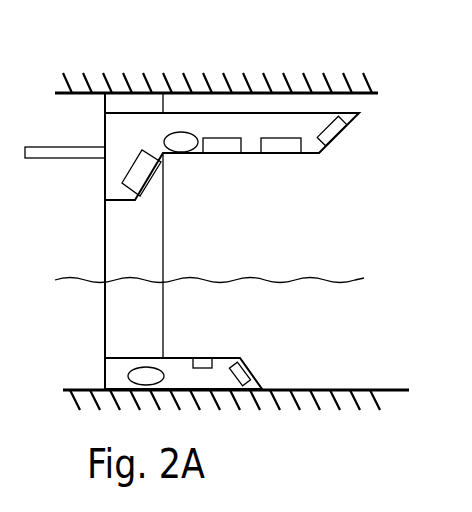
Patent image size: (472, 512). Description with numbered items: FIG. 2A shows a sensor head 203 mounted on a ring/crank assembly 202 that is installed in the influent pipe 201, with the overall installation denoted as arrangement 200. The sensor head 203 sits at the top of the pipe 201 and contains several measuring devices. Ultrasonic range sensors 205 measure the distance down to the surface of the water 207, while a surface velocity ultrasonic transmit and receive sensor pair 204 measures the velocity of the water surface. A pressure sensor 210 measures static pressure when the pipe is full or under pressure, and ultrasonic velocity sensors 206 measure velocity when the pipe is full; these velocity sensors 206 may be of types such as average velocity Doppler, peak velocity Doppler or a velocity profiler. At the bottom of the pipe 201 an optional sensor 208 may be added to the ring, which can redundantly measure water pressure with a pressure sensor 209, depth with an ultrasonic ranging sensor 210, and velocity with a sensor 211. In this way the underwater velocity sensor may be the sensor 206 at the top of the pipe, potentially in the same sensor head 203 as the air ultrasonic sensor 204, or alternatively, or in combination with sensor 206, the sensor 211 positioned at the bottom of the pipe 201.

The tool body / support structure 200 is at (120, 298).
The pipe 201 is at (369, 73).
The ring/crank assembly 202 is at (73, 158).
The sensor head 203 is at (231, 122).
The surface velocity ultrasonic transmit and receive sensor pair 204 is at (142, 170).
The ultrasonic range sensors 205 is at (220, 143).
The ultrasonic velocity sensors 206 is at (336, 135).
The surface of the water 207 is at (364, 278).
The optional sensor 208 is at (180, 377).
The pressure sensor 209 is at (143, 377).
The pressure sensor 210 is at (182, 132).
The velocity sensor 211 is at (244, 375).